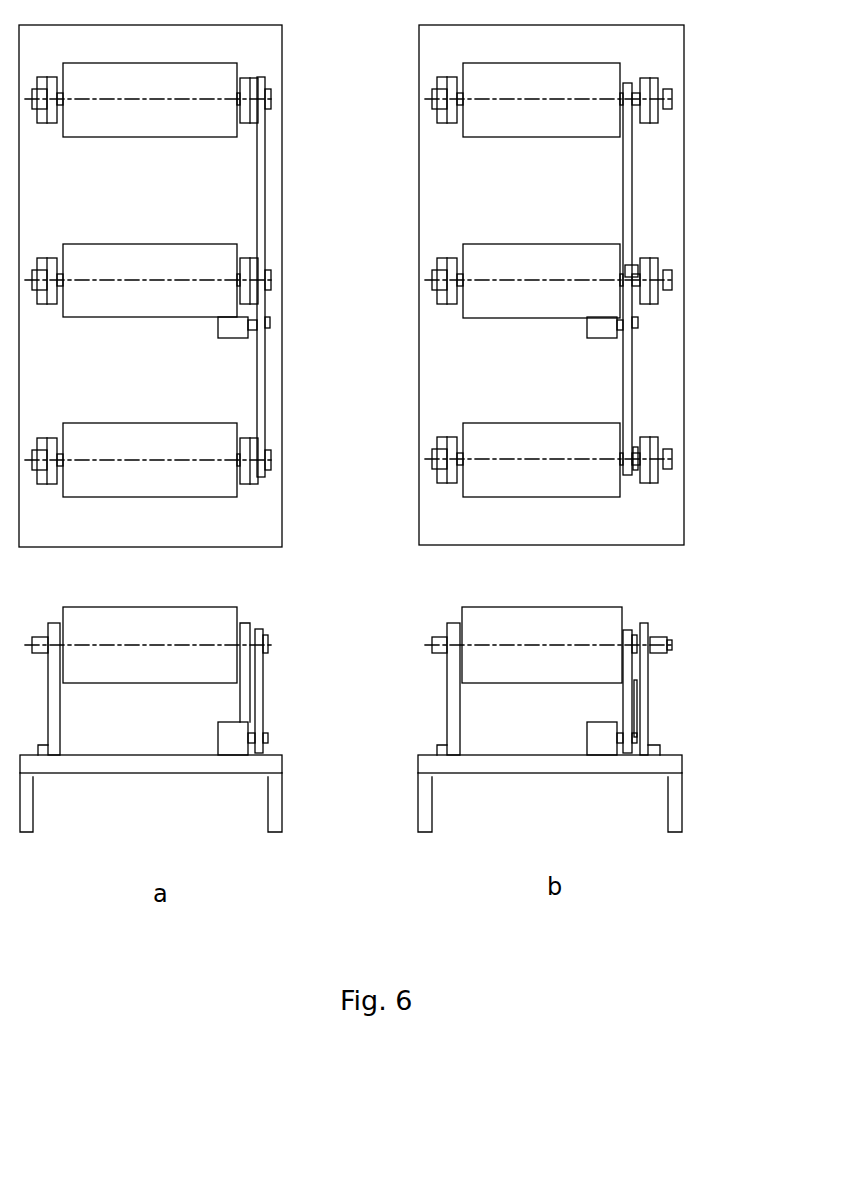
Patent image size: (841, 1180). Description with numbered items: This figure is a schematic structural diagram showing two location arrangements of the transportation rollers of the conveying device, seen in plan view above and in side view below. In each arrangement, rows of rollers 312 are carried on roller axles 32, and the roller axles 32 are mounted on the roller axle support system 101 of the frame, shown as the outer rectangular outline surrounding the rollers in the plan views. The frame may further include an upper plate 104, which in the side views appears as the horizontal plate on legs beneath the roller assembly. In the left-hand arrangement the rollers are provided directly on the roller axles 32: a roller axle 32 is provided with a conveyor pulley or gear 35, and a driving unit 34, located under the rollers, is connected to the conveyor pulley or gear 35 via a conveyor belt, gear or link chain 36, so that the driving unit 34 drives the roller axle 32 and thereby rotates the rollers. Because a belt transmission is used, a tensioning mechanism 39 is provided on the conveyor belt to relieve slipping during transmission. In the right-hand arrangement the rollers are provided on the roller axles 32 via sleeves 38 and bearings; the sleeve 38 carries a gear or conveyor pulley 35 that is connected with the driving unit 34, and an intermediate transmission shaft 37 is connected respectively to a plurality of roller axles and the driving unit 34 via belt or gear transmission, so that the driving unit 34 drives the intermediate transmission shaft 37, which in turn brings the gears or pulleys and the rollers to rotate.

The roller axle 32 is at (477, 87).
The regular roller 312 is at (341, 260).
The driving unit 34 is at (399, 337).
The conveyor pulley or gear 35 is at (467, 277).
The conveyor belt, gear or link chain 36 is at (469, 322).
The intermediate transmission shaft 37 is at (606, 691).
The sleeve 38 is at (653, 437).
The tensioning mechanism 39 is at (282, 691).
The roller axle support system 101 is at (377, 286).
The upper plate 104 is at (383, 741).